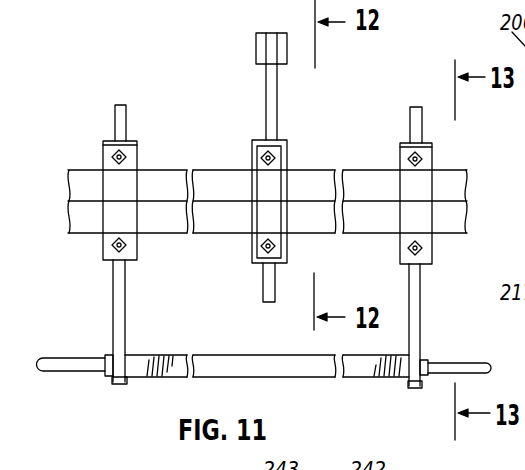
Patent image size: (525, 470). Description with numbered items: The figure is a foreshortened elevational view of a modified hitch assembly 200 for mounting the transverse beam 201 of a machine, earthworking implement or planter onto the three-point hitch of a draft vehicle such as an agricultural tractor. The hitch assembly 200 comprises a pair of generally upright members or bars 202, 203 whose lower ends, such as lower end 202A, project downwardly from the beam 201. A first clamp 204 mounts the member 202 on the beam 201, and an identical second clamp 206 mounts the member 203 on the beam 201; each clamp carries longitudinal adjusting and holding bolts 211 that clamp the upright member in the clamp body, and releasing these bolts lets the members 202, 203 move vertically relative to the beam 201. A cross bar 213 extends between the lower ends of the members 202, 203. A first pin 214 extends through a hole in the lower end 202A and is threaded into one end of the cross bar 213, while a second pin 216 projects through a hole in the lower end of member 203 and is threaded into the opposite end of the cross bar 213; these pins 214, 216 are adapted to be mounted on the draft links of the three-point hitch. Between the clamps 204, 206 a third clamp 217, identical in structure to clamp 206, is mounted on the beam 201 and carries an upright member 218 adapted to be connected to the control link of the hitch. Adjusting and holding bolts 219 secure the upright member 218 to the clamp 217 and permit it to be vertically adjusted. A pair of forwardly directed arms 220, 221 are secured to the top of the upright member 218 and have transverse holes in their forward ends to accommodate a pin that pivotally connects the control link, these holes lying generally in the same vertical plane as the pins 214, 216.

The hitch assembly 200 is at (358, 116).
The transverse beam 201 is at (77, 182).
The upright member 202 is at (121, 118).
The lower end 202A is at (118, 384).
The upright member 203 is at (421, 118).
The first clamp 204 is at (99, 254).
The second clamp 206 is at (436, 258).
The adjusting and holding bolts 211 is at (420, 158).
The cross bar 213 is at (323, 380).
The first pin 214 is at (84, 367).
The second pin 216 is at (462, 368).
The third clamp 217 is at (250, 247).
The upright member 218 is at (268, 297).
The adjusting and holding bolts 219 is at (524, 240).
The forwardly directed arm 220 is at (258, 52).
The forwardly directed arm 221 is at (287, 52).